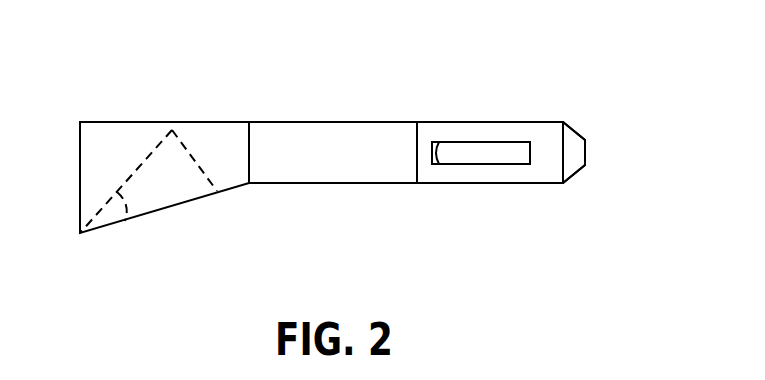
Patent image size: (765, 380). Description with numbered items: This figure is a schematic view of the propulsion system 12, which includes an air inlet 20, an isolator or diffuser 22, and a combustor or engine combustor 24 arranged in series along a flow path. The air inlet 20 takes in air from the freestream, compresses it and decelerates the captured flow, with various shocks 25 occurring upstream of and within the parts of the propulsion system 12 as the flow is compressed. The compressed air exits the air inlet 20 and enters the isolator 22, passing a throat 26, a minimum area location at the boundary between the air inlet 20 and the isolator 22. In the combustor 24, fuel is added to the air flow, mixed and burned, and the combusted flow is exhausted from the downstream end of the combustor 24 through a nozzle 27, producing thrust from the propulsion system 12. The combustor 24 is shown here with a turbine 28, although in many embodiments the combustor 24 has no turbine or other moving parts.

The propulsion system 12 is at (106, 88).
The air inlet 20 is at (167, 180).
The isolator 22 is at (387, 183).
The combustor 24 is at (545, 122).
The shocks 25 is at (125, 221).
The throat 26 is at (249, 152).
The nozzle 27 is at (573, 152).
The turbine 28 is at (478, 183).